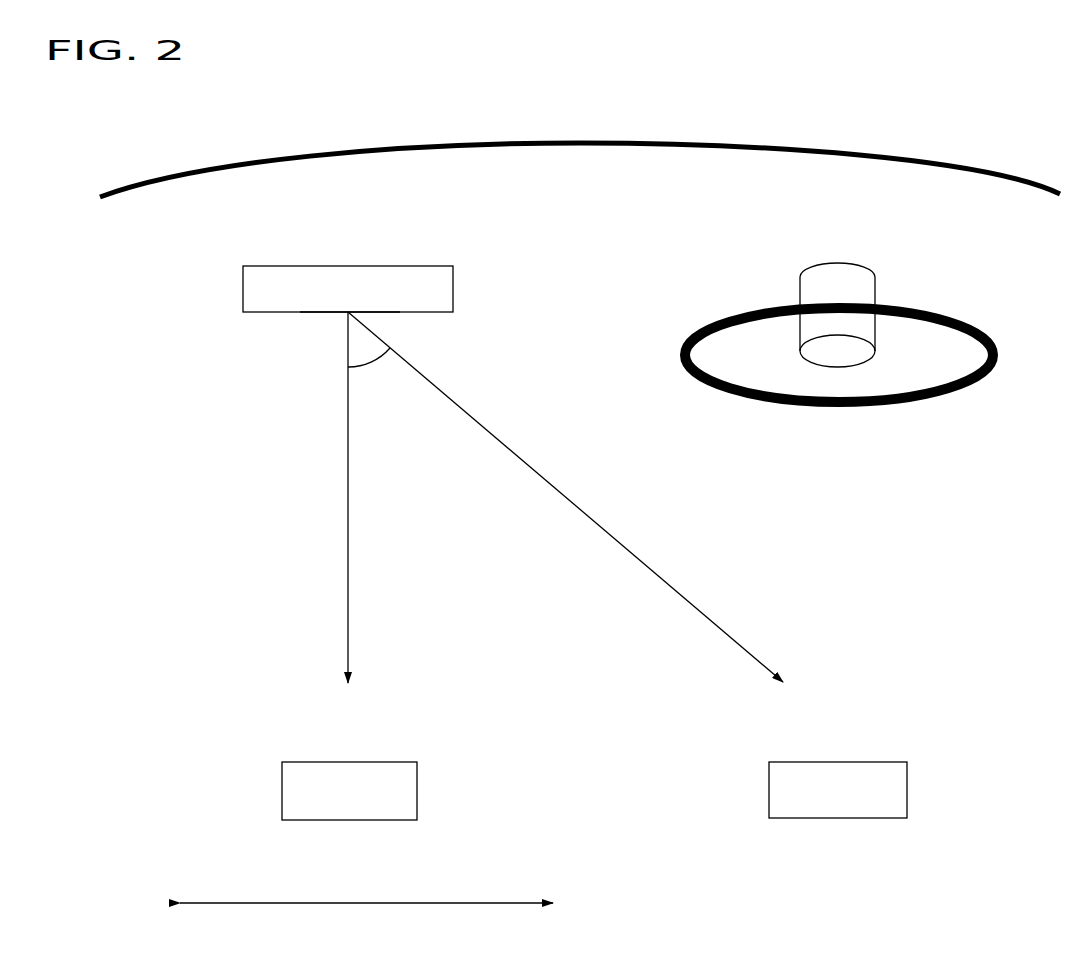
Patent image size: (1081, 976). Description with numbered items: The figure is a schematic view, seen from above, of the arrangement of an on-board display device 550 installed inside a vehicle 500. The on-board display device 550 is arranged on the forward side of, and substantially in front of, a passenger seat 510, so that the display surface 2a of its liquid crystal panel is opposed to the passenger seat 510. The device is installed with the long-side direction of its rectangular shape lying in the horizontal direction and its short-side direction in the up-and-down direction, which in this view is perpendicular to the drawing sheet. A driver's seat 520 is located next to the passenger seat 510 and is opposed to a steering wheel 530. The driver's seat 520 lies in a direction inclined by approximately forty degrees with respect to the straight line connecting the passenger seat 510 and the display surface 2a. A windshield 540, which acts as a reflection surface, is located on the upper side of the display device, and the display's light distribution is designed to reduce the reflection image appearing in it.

The vehicle 500 is at (851, 76).
The windshield 540 is at (371, 146).
The on-board display device 550 is at (210, 296).
The display surface 2a is at (290, 313).
The steering wheel 530 is at (941, 404).
The passenger seat 510 is at (390, 760).
The driver's seat 520 is at (882, 760).